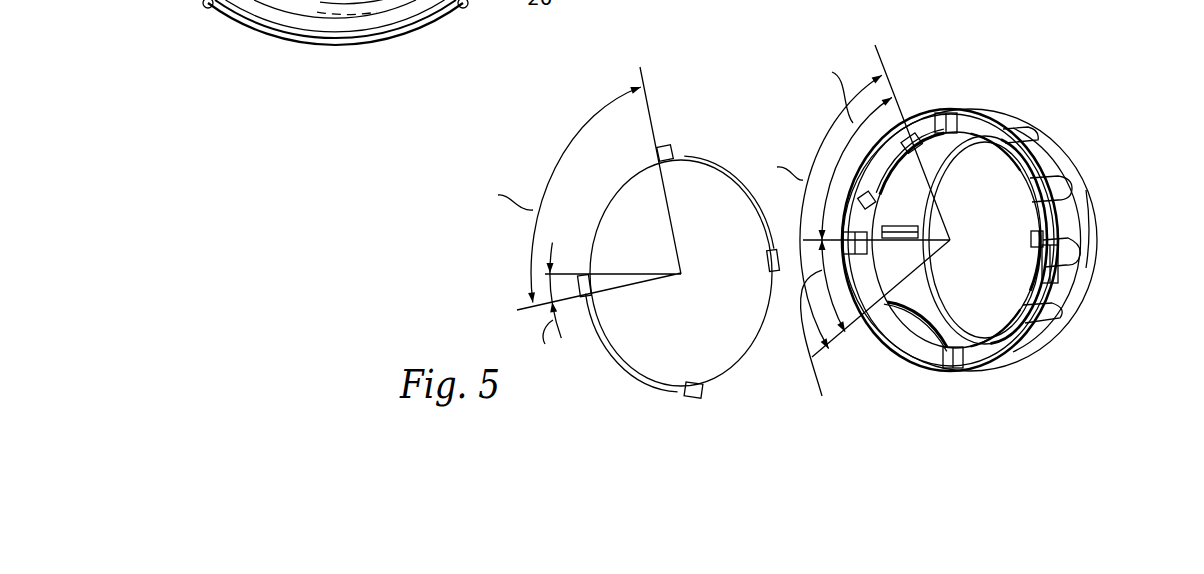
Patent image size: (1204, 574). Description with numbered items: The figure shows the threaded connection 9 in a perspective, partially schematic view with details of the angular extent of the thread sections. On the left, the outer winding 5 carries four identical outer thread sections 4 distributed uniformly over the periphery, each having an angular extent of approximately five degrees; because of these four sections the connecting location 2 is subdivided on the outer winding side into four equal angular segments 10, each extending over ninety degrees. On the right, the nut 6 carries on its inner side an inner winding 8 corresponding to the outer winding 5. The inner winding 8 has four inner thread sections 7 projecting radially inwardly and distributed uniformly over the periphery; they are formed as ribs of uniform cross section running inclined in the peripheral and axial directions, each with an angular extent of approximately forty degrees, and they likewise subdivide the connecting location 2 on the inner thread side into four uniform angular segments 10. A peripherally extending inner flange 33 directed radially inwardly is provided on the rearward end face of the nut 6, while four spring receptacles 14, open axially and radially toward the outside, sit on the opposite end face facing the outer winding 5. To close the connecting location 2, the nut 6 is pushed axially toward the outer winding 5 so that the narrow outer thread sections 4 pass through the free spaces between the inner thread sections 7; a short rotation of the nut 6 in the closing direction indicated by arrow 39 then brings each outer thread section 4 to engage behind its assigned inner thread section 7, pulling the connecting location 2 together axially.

The connecting location 2 is at (748, 103).
The outer thread section 4 is at (735, 168).
The outer winding 5 is at (773, 284).
The nut 6 is at (1052, 156).
The inner thread section 7 is at (887, 160).
The inner winding 8 is at (905, 164).
The threaded connection 9 is at (678, 135).
The angular segment 10 is at (556, 152).
The spring receptacle 14 is at (960, 120).
The inner flange 33 is at (940, 190).
The arrow 39 is at (1090, 210).